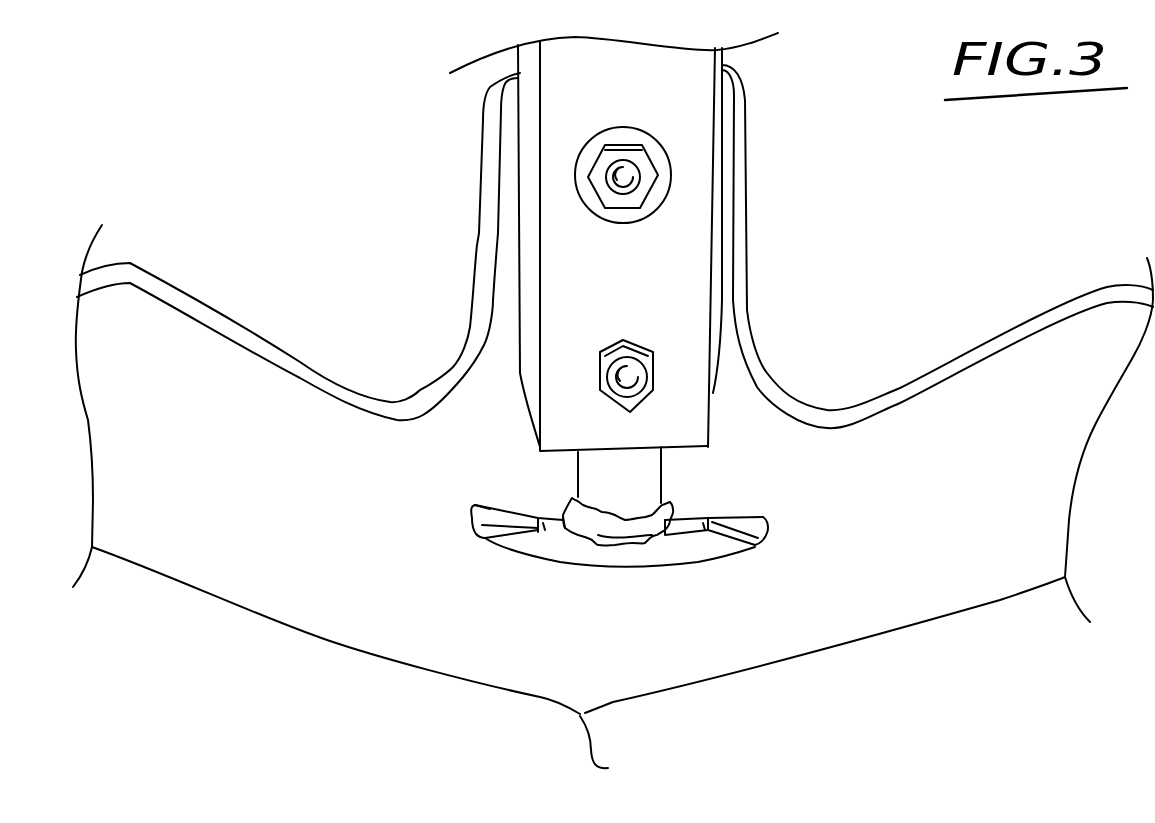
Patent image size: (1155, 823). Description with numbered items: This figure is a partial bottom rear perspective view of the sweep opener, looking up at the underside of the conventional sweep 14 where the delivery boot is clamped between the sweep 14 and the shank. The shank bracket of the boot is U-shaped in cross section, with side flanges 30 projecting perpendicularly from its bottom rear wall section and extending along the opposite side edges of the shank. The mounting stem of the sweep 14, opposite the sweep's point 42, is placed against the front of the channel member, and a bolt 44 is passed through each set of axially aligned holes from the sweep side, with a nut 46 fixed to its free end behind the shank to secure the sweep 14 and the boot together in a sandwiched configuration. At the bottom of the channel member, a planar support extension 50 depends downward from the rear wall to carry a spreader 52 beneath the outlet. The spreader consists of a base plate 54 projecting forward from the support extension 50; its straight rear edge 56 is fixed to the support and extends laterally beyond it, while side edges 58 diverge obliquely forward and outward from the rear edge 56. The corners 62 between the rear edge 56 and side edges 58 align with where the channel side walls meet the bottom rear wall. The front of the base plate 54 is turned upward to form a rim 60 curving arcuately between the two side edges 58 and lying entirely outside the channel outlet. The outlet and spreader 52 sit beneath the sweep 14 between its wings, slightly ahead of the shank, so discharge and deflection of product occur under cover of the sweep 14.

The sweep 14 is at (832, 613).
The side flanges 30 is at (523, 243).
The point 42 is at (616, 752).
The bolt 44 is at (625, 177).
The nut 46 is at (670, 183).
The support extension 50 is at (647, 465).
The spreader 52 is at (603, 583).
The base plate 54 is at (652, 556).
The rear edge 56 is at (705, 548).
The side edges 58 is at (495, 538).
The rim 60 is at (500, 510).
The corners 62 is at (543, 527).